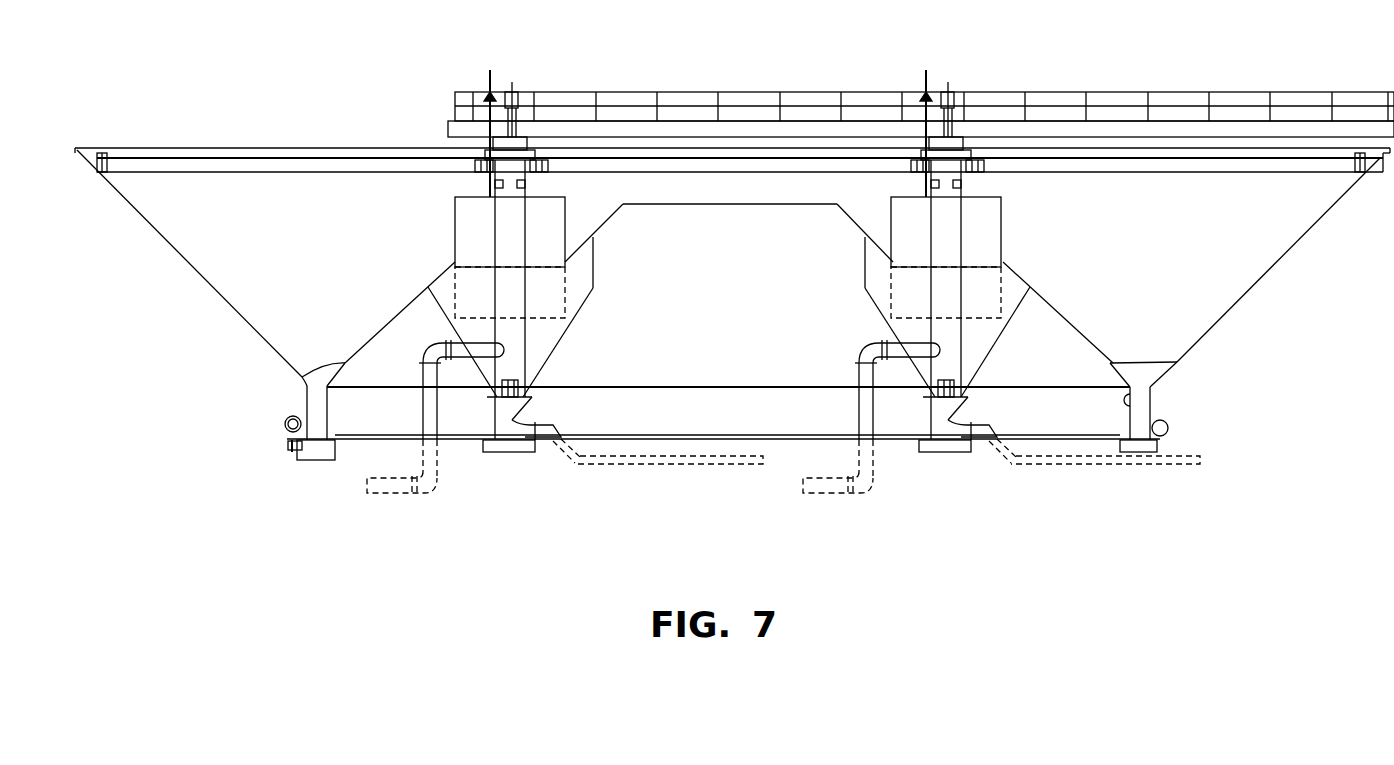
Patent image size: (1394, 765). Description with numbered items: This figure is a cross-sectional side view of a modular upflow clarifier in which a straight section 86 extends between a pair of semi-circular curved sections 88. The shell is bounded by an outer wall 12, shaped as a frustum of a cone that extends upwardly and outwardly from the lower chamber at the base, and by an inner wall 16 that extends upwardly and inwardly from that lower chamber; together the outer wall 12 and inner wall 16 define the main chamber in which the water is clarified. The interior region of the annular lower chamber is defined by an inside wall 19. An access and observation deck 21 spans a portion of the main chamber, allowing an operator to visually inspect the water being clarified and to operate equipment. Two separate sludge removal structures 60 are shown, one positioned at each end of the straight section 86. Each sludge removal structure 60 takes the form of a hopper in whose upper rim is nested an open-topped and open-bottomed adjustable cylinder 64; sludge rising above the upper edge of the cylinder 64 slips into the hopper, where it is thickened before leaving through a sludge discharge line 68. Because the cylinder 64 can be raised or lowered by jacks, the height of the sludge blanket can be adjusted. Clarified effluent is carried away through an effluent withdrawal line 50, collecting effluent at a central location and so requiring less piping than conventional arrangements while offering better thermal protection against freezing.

The outer wall 12 is at (249, 322).
The inner wall 16 is at (300, 376).
The inside wall 19 is at (634, 420).
The access and observation deck 21 is at (1158, 130).
The effluent withdrawal line 50 is at (505, 440).
The sludge removal structure 60 is at (450, 210).
The adjustable cylinder 64 is at (568, 205).
The sludge discharge line 68 is at (432, 400).
The straight section 86 is at (742, 190).
The semi-circular curved sections 88 is at (207, 280).